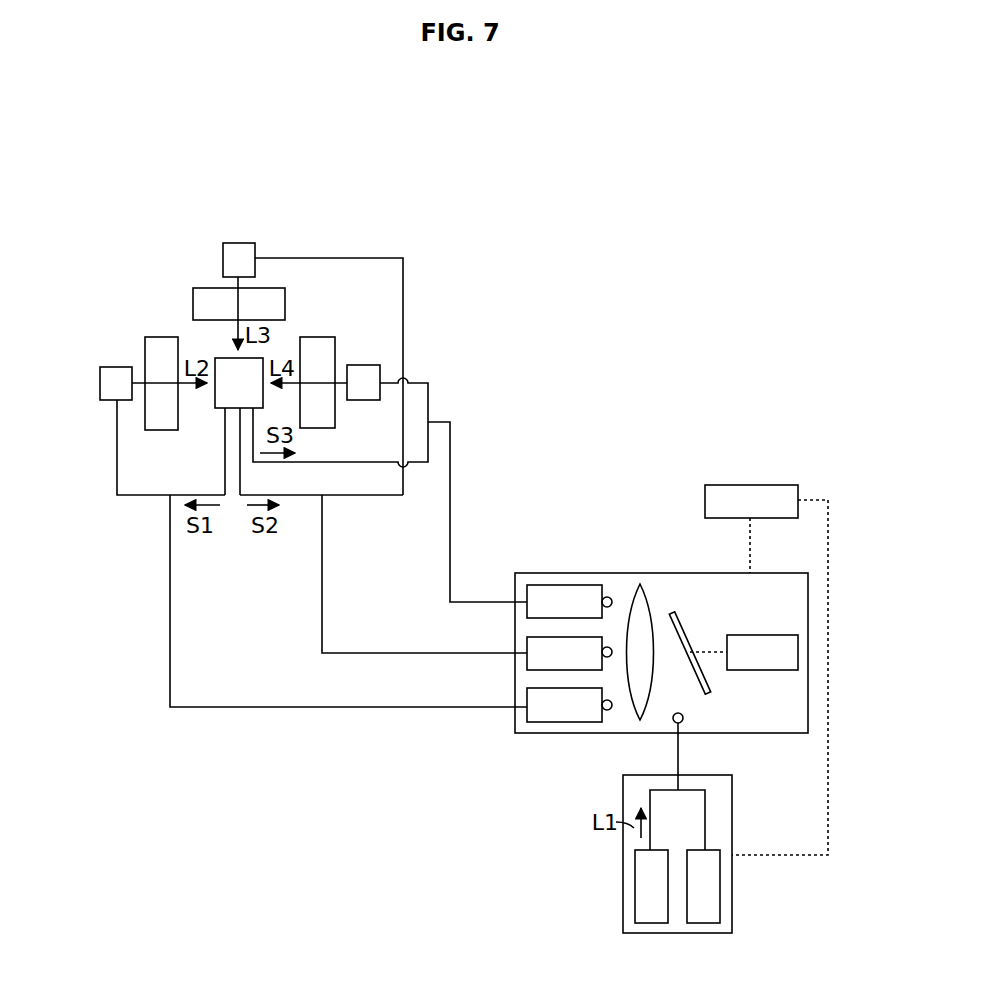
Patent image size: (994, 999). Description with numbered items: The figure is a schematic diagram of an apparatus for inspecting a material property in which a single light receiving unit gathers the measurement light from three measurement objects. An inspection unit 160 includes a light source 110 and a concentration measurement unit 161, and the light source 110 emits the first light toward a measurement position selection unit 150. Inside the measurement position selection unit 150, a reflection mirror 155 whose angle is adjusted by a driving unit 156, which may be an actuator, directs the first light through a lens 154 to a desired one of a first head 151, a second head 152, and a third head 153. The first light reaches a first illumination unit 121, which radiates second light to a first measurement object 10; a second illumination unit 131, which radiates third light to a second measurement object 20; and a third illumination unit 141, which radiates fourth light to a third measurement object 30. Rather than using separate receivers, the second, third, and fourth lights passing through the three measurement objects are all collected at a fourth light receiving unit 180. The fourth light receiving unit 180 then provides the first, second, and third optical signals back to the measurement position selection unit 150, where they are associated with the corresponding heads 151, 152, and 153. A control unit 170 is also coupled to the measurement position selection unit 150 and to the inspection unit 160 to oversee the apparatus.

The first measurement object 10 is at (145, 337).
The second measurement object 20 is at (193, 289).
The third measurement object 30 is at (318, 337).
The light source 110 is at (650, 923).
The first illumination unit 121 is at (100, 367).
The second illumination unit 131 is at (238, 243).
The third illumination unit 141 is at (358, 365).
The measurement position selection unit 150 is at (808, 573).
The first head 151 is at (527, 689).
The second head 152 is at (527, 638).
The third head 153 is at (527, 586).
The lens 154 is at (640, 584).
The reflection mirror 155 is at (708, 693).
The driving unit 156 is at (798, 635).
The inspection unit 160 is at (732, 775).
The concentration measurement unit 161 is at (705, 923).
The control unit 170 is at (800, 485).
The fourth light receiving unit 180 is at (218, 408).